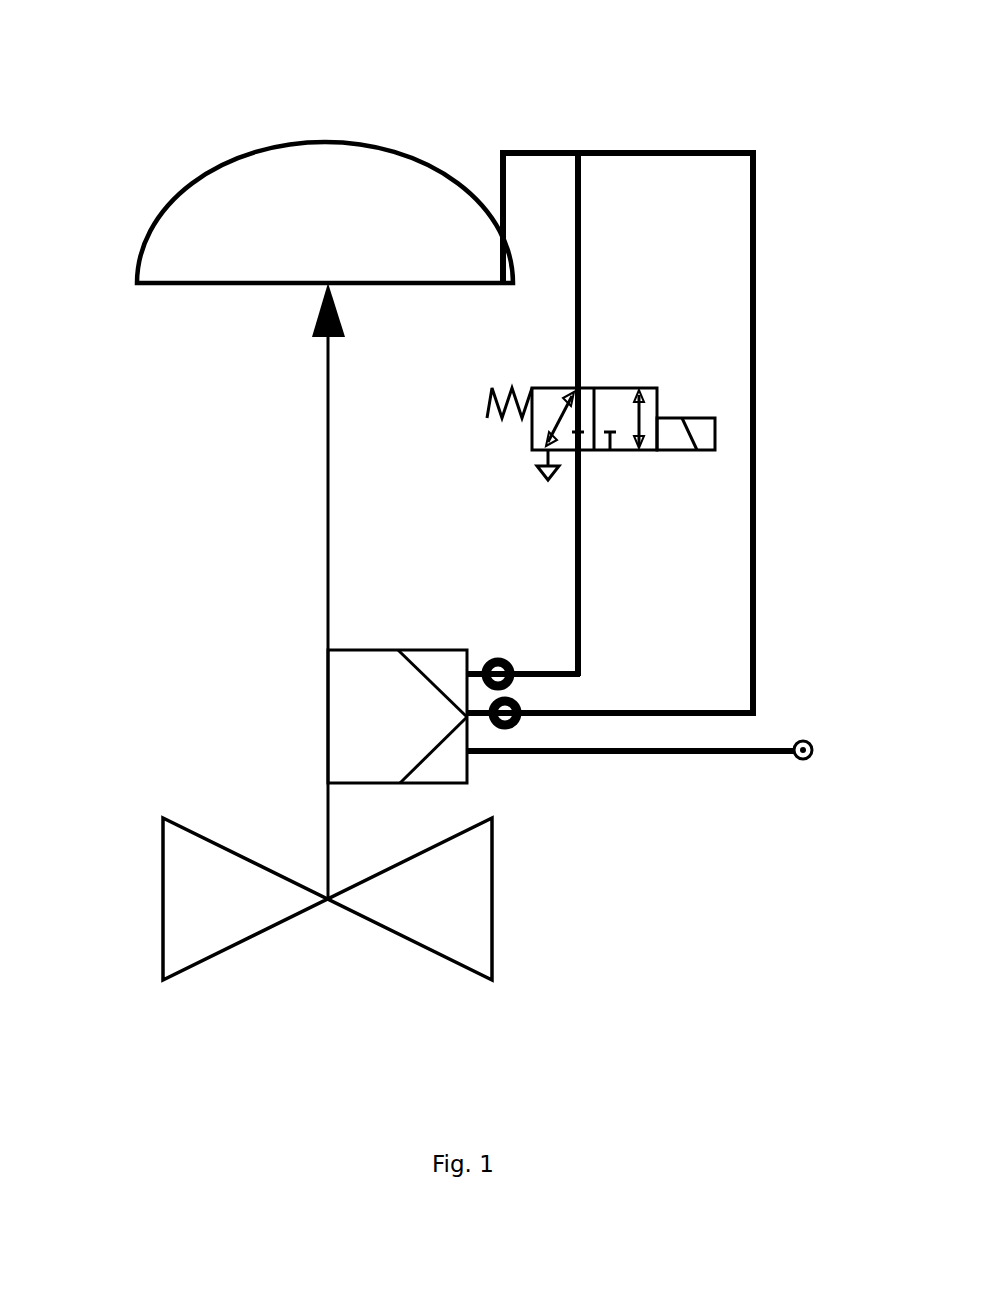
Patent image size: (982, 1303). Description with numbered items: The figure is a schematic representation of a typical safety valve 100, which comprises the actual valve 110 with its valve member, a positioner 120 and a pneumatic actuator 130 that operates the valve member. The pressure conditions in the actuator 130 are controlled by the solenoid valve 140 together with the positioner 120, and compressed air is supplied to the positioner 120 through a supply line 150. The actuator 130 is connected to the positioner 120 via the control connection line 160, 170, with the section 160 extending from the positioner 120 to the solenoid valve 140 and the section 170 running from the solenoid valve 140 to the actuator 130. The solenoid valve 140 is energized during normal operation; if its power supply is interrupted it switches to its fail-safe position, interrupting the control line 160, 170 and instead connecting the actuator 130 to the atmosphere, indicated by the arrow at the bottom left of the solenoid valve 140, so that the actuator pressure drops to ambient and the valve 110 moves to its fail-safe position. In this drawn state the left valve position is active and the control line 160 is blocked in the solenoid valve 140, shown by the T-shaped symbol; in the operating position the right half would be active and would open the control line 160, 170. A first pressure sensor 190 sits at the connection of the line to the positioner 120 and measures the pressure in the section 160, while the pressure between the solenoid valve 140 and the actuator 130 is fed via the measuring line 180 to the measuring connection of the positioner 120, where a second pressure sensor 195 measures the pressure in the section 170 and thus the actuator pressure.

The safety valve 100 is at (160, 92).
The valve 110 is at (265, 955).
The positioner 120 is at (348, 622).
The pneumatic actuator 130 is at (347, 125).
The solenoid valve 140 is at (607, 375).
The supply line 150 is at (780, 768).
The control line 160 is at (570, 567).
The control line 170 is at (583, 277).
The measuring line 180 is at (765, 538).
The first pressure sensor 190 is at (505, 648).
The second pressure sensor 195 is at (527, 720).